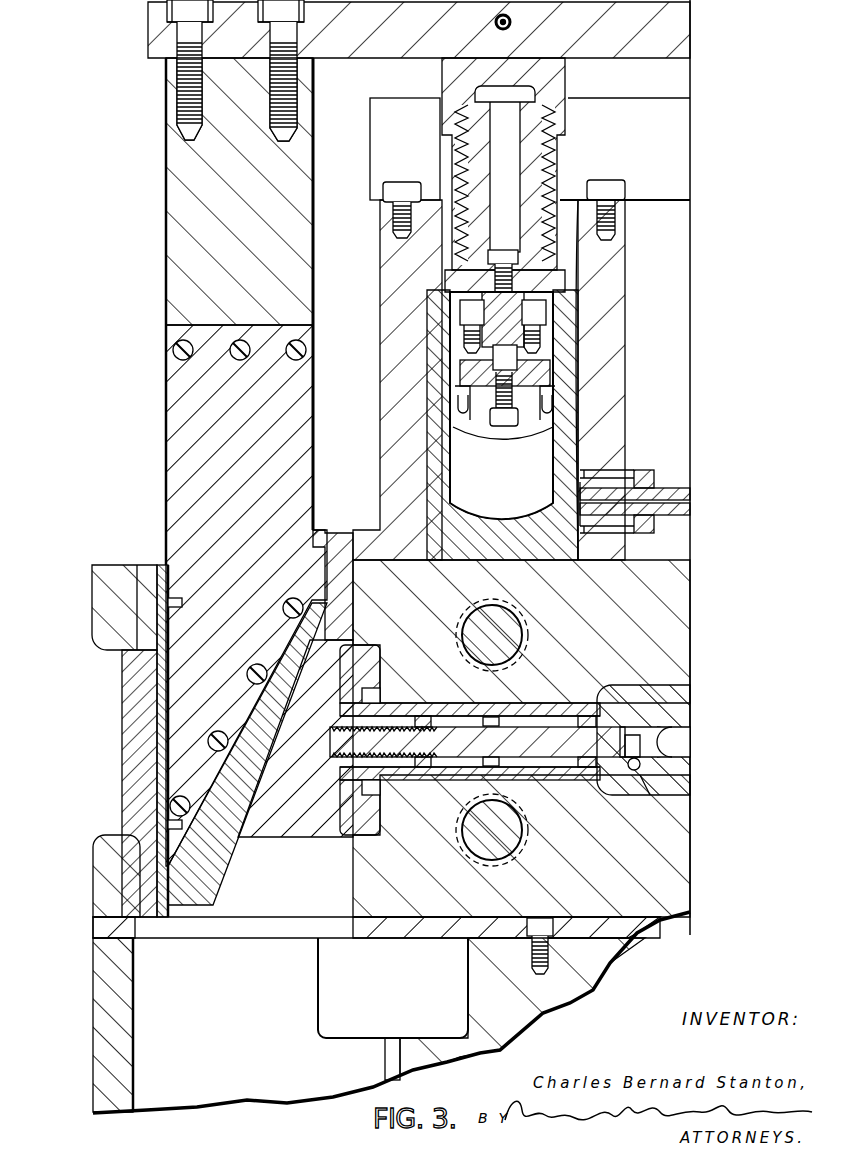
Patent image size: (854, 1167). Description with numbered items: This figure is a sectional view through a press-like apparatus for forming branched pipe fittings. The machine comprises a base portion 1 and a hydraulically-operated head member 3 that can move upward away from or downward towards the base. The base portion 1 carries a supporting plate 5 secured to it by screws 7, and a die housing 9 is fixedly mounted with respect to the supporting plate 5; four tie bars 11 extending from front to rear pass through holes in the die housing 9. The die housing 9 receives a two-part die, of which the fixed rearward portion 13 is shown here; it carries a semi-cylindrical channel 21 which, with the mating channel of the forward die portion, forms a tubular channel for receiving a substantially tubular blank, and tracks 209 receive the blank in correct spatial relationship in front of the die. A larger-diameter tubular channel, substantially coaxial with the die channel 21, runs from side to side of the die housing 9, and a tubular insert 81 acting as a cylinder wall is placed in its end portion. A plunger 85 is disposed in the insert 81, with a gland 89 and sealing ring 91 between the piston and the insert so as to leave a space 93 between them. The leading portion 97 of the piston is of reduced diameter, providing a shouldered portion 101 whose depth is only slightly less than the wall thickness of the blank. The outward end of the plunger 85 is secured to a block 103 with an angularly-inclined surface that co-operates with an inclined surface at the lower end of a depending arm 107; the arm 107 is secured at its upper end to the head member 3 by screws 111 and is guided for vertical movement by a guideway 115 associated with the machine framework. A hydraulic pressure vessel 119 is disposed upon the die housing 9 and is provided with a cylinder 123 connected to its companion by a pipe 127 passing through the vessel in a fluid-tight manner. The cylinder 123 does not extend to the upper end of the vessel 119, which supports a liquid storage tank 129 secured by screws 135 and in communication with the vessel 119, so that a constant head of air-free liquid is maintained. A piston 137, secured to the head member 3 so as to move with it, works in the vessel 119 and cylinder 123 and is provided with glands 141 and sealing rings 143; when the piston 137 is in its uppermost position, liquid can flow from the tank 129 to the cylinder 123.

The base portion 1 is at (515, 1013).
The head member 3 is at (680, 36).
The supporting plate 5 is at (98, 932).
The screws 7 is at (545, 960).
The die housing 9 is at (380, 873).
The tie bars 11 is at (497, 630).
The rearward portion of the die 13 is at (650, 697).
The semi-cylindrical channel 21 is at (660, 757).
The tubular insert 81 is at (412, 703).
The plunger 85 is at (303, 813).
The gland 89 is at (518, 700).
The sealing ring 91 is at (455, 700).
The space 93 is at (528, 762).
The leading portion of the piston 97 is at (637, 768).
The shouldered portion 101 is at (622, 730).
The block 103 is at (262, 817).
The depending arm 107 is at (180, 415).
The screws 111 is at (280, 95).
The guideway 115 is at (130, 693).
The hydraulic pressure vessel 119 is at (392, 287).
The cylinder 123 is at (433, 416).
The pipe 127 is at (678, 490).
The liquid storage tank 129 is at (372, 110).
The screws 135 is at (393, 215).
The piston 137 is at (477, 418).
The glands 141 is at (448, 378).
The sealing rings 143 is at (557, 397).
The tracks 209 is at (650, 793).